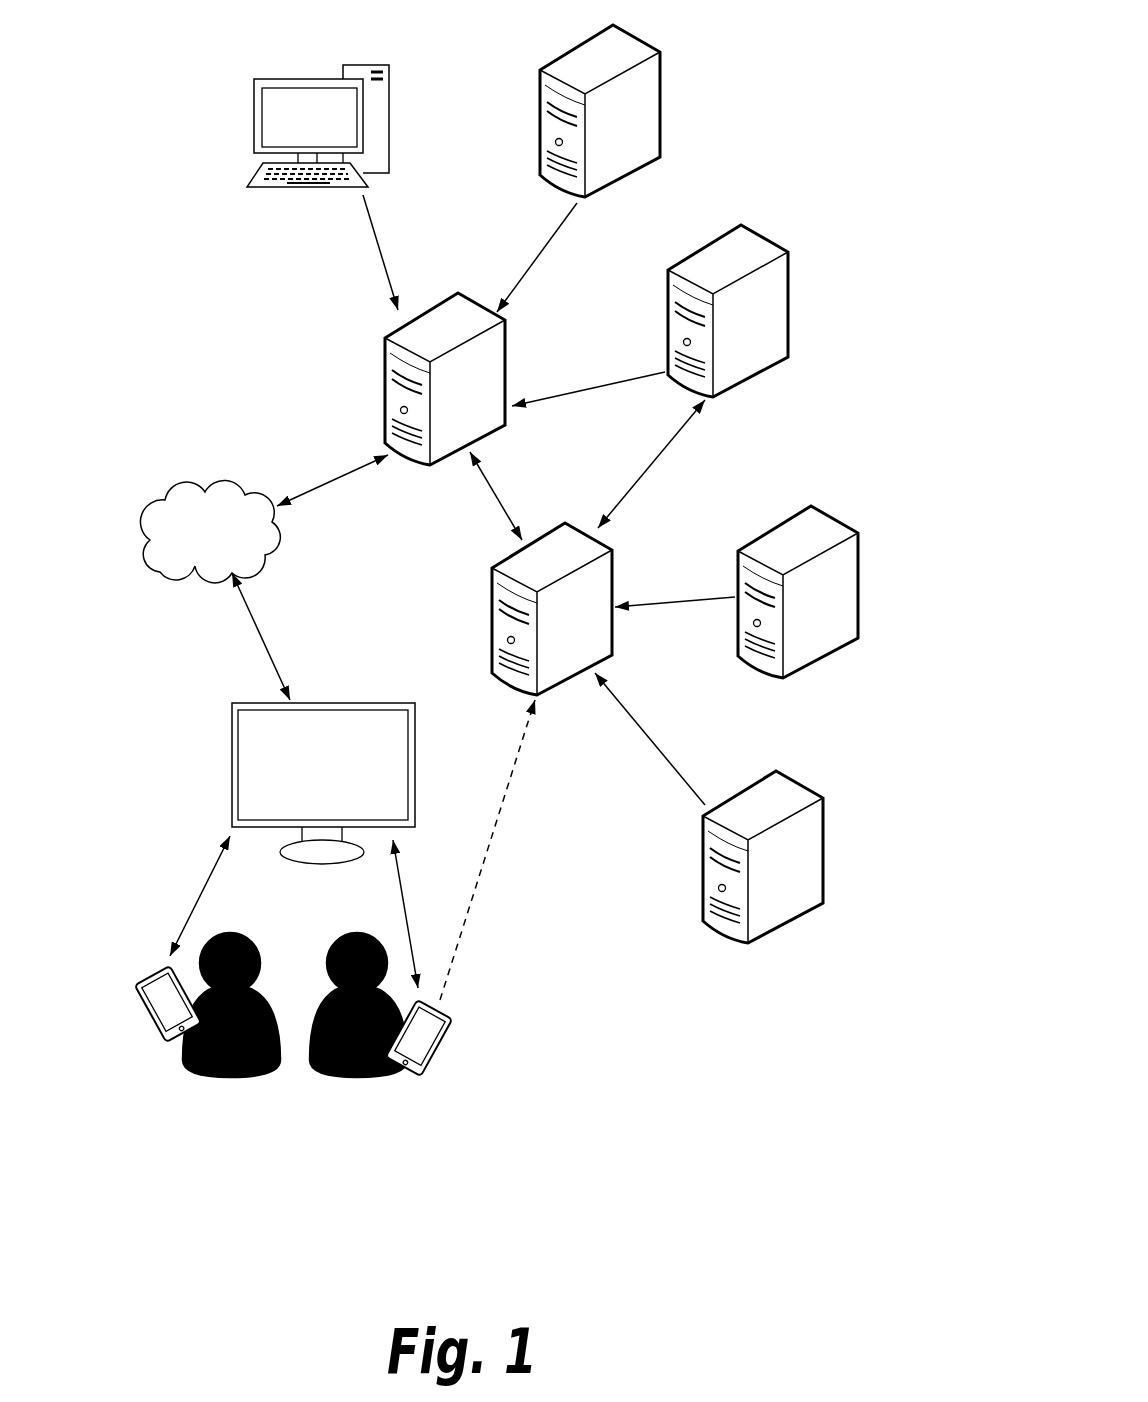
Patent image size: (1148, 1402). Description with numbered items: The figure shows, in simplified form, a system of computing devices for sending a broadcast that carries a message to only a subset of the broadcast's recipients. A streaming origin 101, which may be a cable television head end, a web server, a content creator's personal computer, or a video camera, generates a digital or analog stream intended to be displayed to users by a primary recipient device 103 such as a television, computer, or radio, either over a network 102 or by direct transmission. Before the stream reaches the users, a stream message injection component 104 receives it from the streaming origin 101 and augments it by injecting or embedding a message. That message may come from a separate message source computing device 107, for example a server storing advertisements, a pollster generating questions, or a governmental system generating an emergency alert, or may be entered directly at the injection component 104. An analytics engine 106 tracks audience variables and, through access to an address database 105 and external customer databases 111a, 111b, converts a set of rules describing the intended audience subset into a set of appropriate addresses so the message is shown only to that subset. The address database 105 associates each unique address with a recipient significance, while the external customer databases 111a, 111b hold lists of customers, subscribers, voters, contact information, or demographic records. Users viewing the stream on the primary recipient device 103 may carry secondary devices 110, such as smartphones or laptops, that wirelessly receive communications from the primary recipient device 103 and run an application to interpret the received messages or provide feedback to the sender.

The streaming origin 101 is at (318, 99).
The network 102 is at (210, 532).
The primary recipient device 103 is at (323, 783).
The stream message injection component 104 is at (363, 379).
The address database 105 is at (795, 311).
The analytics engine 106 is at (485, 609).
The message source computing device 107 is at (662, 111).
The secondary device 110 is at (305, 1025).
The external customer database 111a is at (841, 572).
The external customer database 111b is at (799, 884).